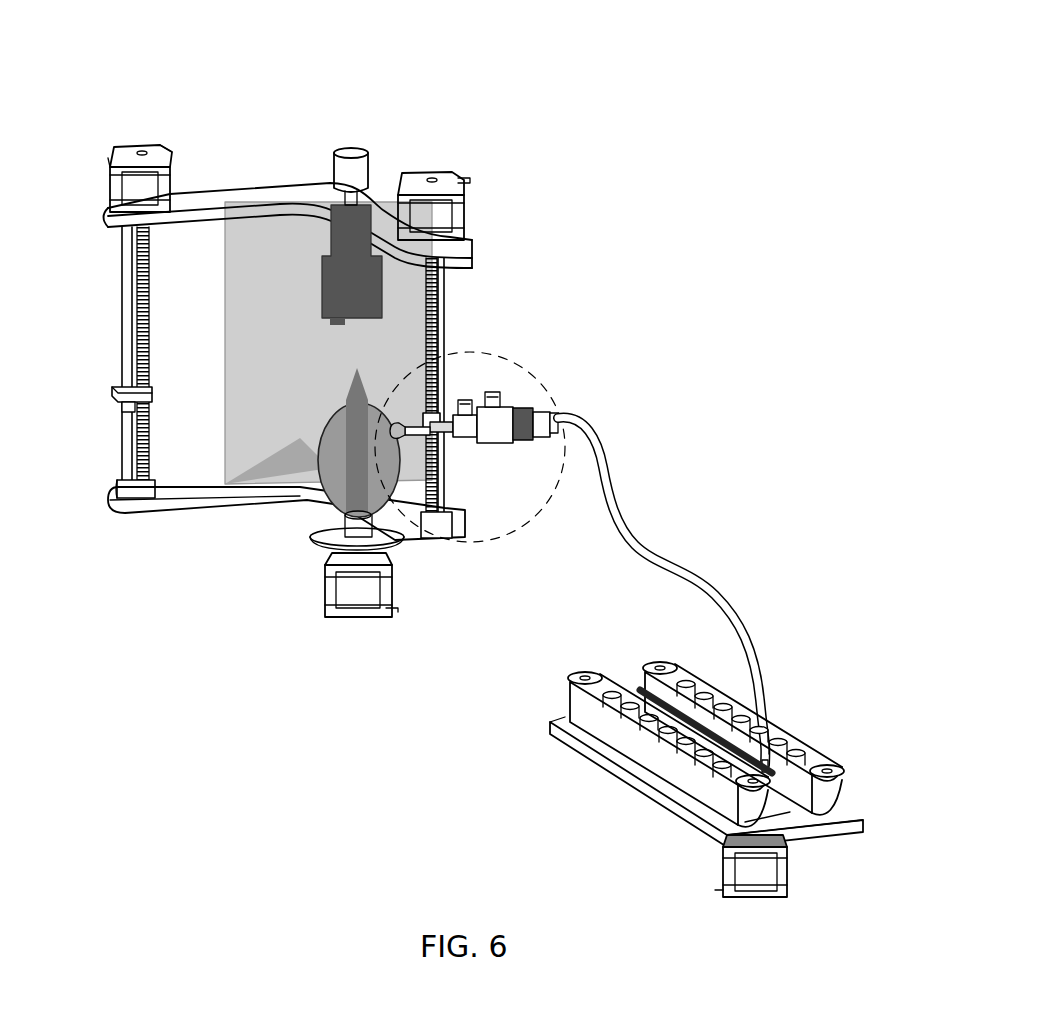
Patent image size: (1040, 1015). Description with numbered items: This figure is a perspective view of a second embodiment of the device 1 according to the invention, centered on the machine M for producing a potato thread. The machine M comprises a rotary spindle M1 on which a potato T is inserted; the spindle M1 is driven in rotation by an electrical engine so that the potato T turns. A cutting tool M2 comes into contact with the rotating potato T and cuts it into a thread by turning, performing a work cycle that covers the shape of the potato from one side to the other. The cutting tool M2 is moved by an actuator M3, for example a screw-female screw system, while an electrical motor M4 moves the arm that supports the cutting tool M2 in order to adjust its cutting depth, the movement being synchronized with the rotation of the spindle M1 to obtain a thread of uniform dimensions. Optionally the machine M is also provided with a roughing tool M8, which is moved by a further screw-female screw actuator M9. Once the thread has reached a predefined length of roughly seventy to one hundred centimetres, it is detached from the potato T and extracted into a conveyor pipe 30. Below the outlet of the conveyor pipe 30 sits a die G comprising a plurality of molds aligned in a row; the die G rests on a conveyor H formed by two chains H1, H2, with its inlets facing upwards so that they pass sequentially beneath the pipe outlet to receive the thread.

The inspection system 1 is at (690, 206).
The machine M is at (323, 108).
The rotary spindle M1 is at (438, 350).
The cutting tool M2 is at (433, 400).
The actuator M3 is at (449, 317).
The electrical motor M4 is at (355, 185).
The roughing tool M8 is at (126, 399).
The actuator M9 is at (151, 306).
The potato T is at (312, 461).
The conveyor pipe 30 is at (708, 575).
The die G is at (637, 685).
The conveyor H is at (801, 838).
The chain H1 is at (855, 796).
The chain H2 is at (550, 710).